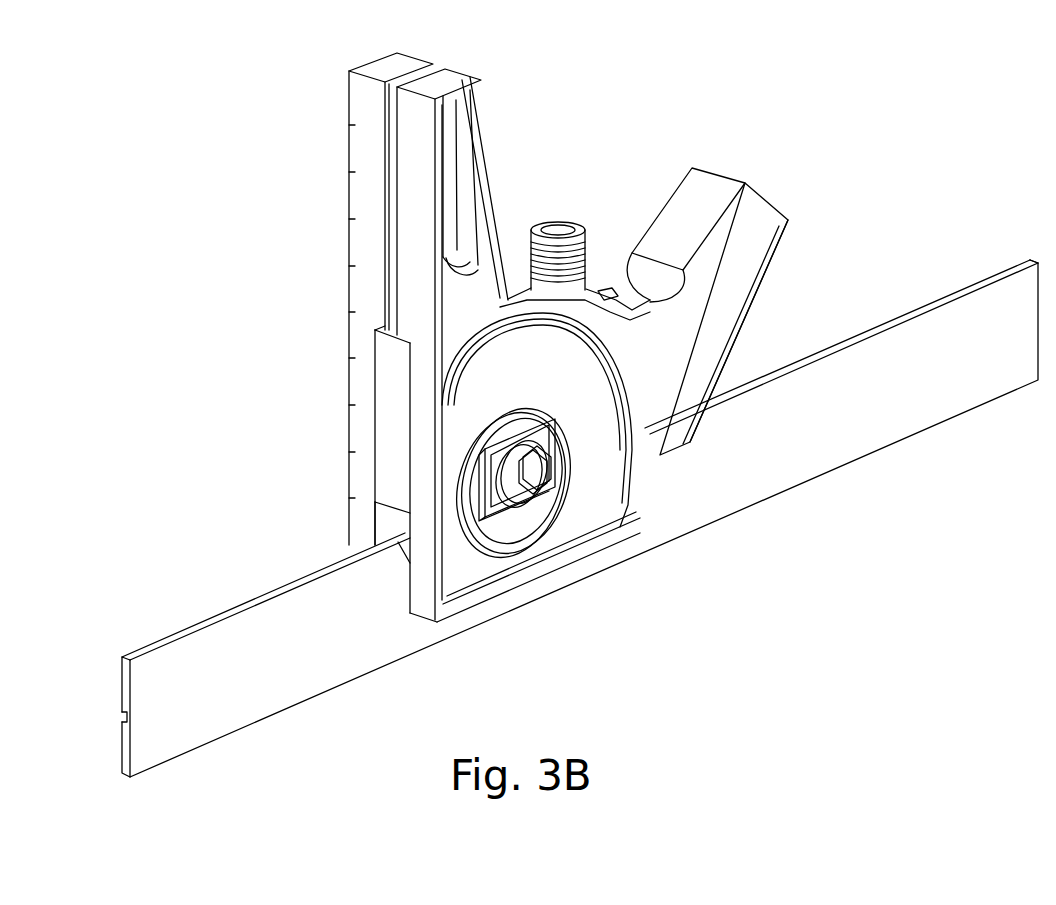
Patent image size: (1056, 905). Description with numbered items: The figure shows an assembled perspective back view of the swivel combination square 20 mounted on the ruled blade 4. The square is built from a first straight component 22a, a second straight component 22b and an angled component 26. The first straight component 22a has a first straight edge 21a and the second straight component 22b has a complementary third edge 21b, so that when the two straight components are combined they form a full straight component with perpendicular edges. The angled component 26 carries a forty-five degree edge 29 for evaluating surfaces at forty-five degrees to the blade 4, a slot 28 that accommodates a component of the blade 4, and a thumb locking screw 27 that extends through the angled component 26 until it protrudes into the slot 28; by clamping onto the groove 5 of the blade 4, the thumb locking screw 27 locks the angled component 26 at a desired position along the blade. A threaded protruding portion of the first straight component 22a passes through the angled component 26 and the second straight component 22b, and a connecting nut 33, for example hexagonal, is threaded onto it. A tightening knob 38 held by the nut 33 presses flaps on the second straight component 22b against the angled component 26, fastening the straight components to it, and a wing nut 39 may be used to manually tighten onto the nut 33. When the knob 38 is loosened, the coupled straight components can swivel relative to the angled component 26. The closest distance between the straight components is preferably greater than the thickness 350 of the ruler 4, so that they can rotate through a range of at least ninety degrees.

The swivel combination square 20 is at (214, 218).
The first straight edge 21a is at (368, 164).
The third edge 21b is at (410, 303).
The first straight component 22a is at (391, 69).
The second straight component 22b is at (450, 78).
The angled component 26 is at (395, 448).
The thumb locking screw 27 is at (558, 232).
The slot 28 is at (398, 542).
The 45 degrees edge 29 is at (752, 293).
The connecting nut 33 is at (538, 498).
The tightening knob 38 is at (495, 545).
The wing nut 39 is at (567, 455).
The ruled blade 4 is at (778, 480).
The groove 5 is at (120, 712).
The thickness 350 is at (994, 328).